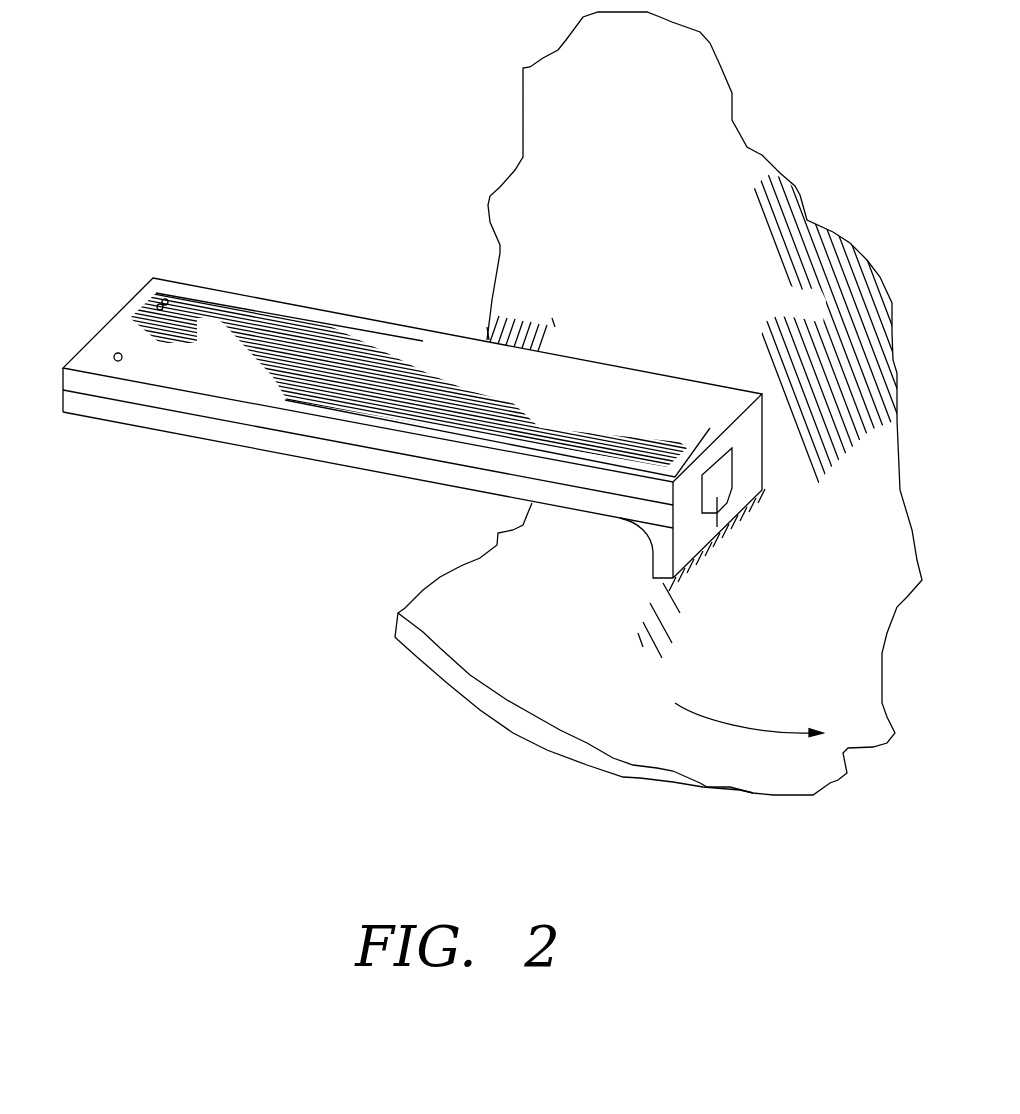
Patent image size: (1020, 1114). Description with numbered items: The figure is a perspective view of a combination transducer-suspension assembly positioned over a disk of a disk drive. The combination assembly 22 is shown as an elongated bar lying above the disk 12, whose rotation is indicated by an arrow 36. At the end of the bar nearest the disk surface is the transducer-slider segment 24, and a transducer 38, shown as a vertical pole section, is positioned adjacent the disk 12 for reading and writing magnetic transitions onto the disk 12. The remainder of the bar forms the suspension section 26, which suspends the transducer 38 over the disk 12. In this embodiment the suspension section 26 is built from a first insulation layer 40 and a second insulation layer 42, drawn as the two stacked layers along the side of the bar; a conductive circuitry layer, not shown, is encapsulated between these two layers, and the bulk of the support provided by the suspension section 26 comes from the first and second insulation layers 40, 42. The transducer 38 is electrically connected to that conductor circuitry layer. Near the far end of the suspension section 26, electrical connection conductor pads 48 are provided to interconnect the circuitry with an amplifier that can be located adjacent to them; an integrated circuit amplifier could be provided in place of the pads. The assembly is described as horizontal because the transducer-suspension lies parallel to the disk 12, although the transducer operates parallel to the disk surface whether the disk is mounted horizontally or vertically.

The disk 12 is at (835, 615).
The combination assembly 22 is at (371, 541).
The transducer-slider segment 24 is at (619, 565).
The suspension section 26 is at (310, 337).
The arrow 36 is at (705, 715).
The transducer 38 is at (722, 508).
The first insulation layer 40 is at (118, 413).
The second insulation layer 42 is at (203, 412).
The electrical connection conductor pads 48 is at (117, 352).